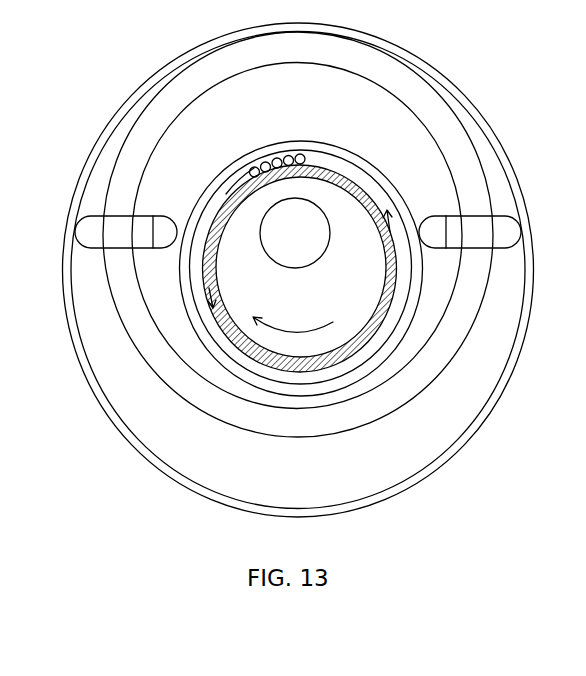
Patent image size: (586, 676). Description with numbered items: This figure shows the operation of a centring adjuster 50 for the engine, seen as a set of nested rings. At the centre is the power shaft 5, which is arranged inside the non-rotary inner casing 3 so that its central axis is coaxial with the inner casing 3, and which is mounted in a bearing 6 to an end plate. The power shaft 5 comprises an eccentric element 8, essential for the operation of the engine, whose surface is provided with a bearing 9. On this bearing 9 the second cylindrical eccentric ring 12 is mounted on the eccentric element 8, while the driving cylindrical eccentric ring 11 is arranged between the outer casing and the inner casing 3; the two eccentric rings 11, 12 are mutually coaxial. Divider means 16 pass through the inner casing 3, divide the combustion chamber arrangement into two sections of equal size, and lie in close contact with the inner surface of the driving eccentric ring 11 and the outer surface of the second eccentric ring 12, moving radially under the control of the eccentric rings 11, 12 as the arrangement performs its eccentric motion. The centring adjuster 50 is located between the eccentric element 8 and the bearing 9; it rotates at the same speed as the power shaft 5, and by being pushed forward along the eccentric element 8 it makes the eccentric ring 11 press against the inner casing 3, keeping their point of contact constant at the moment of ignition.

The driving cylindrical eccentric ring 11 is at (464, 436).
The inner casing 3 is at (438, 372).
The bearing 9 is at (326, 161).
The second cylindrical eccentric ring 12 is at (261, 158).
The eccentric element 8 is at (362, 248).
The power shaft 5 is at (317, 223).
The divider means 16 is at (113, 231).
The bearing 6 is at (482, 232).
The centring adjuster 50 is at (223, 207).